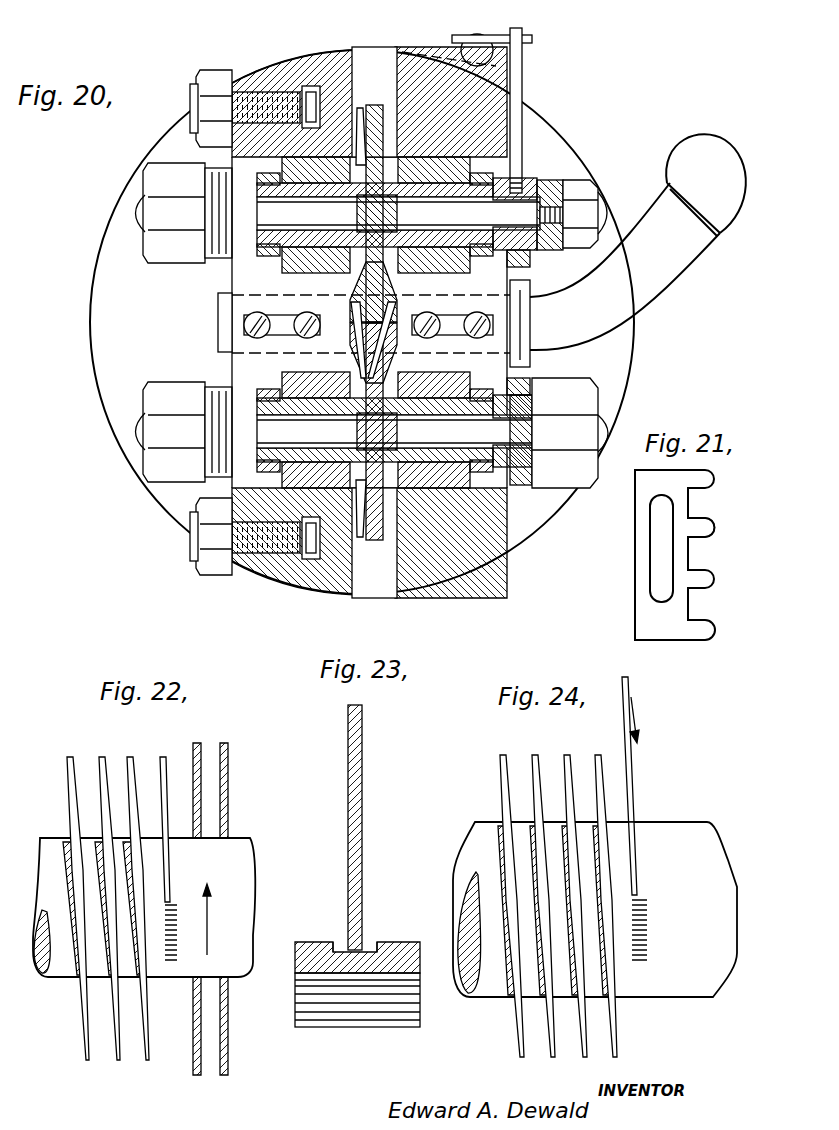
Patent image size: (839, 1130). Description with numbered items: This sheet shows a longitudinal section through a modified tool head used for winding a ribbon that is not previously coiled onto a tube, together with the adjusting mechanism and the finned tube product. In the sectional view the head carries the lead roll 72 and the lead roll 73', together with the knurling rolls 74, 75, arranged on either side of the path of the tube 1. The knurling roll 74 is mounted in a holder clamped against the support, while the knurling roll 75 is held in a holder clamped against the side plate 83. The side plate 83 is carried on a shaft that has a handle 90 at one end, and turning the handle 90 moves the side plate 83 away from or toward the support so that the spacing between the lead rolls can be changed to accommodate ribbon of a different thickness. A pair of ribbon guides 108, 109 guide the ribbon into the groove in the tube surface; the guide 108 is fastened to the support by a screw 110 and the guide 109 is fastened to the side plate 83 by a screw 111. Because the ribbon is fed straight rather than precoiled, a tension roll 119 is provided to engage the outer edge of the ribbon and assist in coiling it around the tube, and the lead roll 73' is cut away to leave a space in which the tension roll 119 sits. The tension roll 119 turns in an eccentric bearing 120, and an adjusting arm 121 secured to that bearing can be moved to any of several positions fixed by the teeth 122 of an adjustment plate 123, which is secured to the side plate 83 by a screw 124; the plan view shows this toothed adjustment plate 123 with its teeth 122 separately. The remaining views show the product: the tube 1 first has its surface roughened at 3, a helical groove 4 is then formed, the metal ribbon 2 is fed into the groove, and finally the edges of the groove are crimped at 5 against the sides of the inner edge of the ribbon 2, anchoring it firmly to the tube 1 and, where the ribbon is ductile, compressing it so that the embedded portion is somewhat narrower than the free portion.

In FIG. 22, the tube 1 is at (233, 856).
In FIG. 23, the tube 1 is at (403, 941).
In FIG. 24, the tube 1 is at (662, 822).
In FIG. 22, the metal ribbon 2 is at (230, 804).
In FIG. 23, the metal ribbon 2 is at (364, 794).
In FIG. 24, the metal ribbon 2 is at (635, 762).
In FIG. 22, the roughened surface 3 is at (178, 940).
In FIG. 24, the roughened surface 3 is at (650, 922).
In FIG. 22, the helical groove 4 is at (171, 884).
In FIG. 24, the helical groove 4 is at (640, 864).
In FIG. 22, the crimped groove edges 5 is at (161, 978).
In FIG. 23, the crimped groove edges 5 is at (340, 941).
In FIG. 20, the lead roll 72 is at (357, 108).
In FIG. 20, the lead roll 73' is at (373, 299).
In FIG. 20, the knurling roll 74 is at (353, 367).
In FIG. 20, the knurling roll 75 is at (394, 365).
In FIG. 20, the side plate 83 is at (486, 585).
In FIG. 20, the handle 90 is at (670, 273).
In FIG. 20, the ribbon guide 108 is at (228, 347).
In FIG. 20, the ribbon guide 109 is at (530, 340).
In FIG. 20, the screw 110 is at (262, 320).
In FIG. 20, the screw 111 is at (500, 327).
In FIG. 20, the tension roll 119 is at (397, 158).
In FIG. 20, the eccentric bearing 120 is at (505, 193).
In FIG. 20, the adjusting arm 121 is at (516, 96).
In FIG. 20, the teeth 122 is at (533, 38).
In FIG. 21, the teeth 122 is at (707, 578).
In FIG. 20, the adjustment plate 123 is at (494, 64).
In FIG. 21, the adjustment plate 123 is at (637, 491).
In FIG. 20, the screw 124 is at (494, 50).